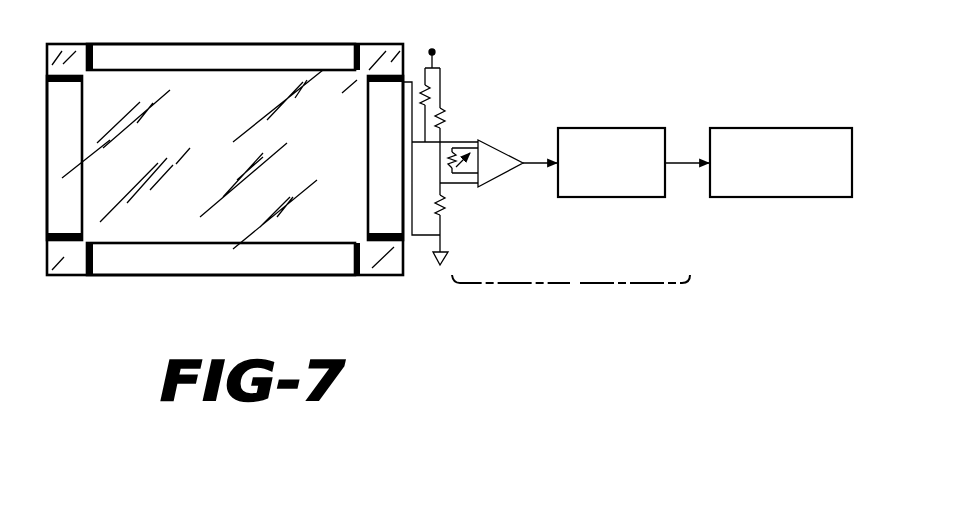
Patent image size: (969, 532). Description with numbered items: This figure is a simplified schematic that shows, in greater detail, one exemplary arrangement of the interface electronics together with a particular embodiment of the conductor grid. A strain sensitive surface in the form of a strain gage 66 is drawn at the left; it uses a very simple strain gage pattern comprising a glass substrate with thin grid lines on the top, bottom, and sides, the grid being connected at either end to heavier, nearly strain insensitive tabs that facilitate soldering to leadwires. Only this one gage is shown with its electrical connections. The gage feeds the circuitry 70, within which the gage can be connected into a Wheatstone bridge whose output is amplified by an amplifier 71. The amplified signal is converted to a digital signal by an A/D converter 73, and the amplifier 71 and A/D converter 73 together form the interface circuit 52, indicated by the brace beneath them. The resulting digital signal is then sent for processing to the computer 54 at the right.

The strain gage 66 is at (253, 50).
The sensing circuit 70 is at (556, 142).
The amplifier 71 is at (497, 170).
The A/D converter 73 is at (608, 127).
The computer 54 is at (790, 93).
The interface circuit 52 is at (575, 286).